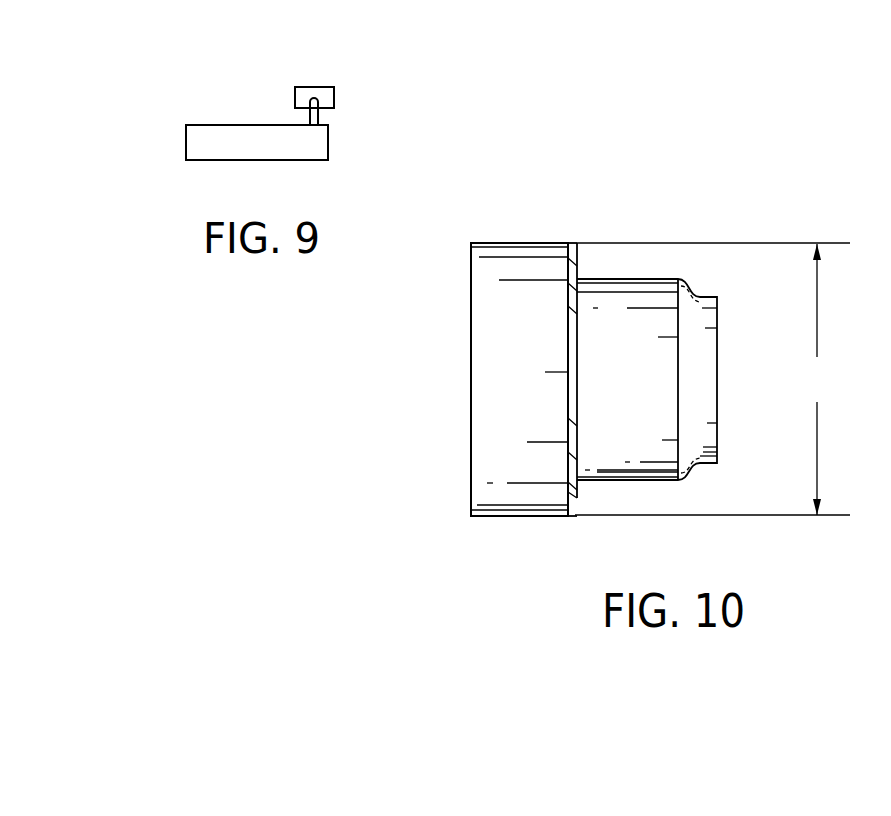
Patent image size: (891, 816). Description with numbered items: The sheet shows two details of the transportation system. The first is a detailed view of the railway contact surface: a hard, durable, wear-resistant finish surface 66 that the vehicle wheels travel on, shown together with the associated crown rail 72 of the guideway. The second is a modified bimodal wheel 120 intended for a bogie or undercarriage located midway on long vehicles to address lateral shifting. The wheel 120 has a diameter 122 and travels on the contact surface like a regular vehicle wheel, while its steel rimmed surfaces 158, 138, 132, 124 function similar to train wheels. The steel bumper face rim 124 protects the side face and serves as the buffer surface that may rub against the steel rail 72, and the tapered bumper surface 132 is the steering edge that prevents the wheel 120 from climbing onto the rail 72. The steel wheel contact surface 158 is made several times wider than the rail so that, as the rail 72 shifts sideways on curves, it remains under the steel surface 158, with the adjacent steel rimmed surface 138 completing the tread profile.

In FIG. 9, the finish surface 66 is at (197, 125).
In FIG. 9, the crown rail 72 is at (318, 87).
In FIG. 10, the bimodal wheel 120 is at (577, 184).
In FIG. 10, the diameter 122 is at (709, 379).
In FIG. 10, the steel bumper face rim 124 is at (577, 268).
In FIG. 10, the tapered bumper surface 132 is at (577, 498).
In FIG. 10, the steel rimmed surface 138 is at (708, 300).
In FIG. 10, the steel wheel contact surface 158 is at (656, 302).